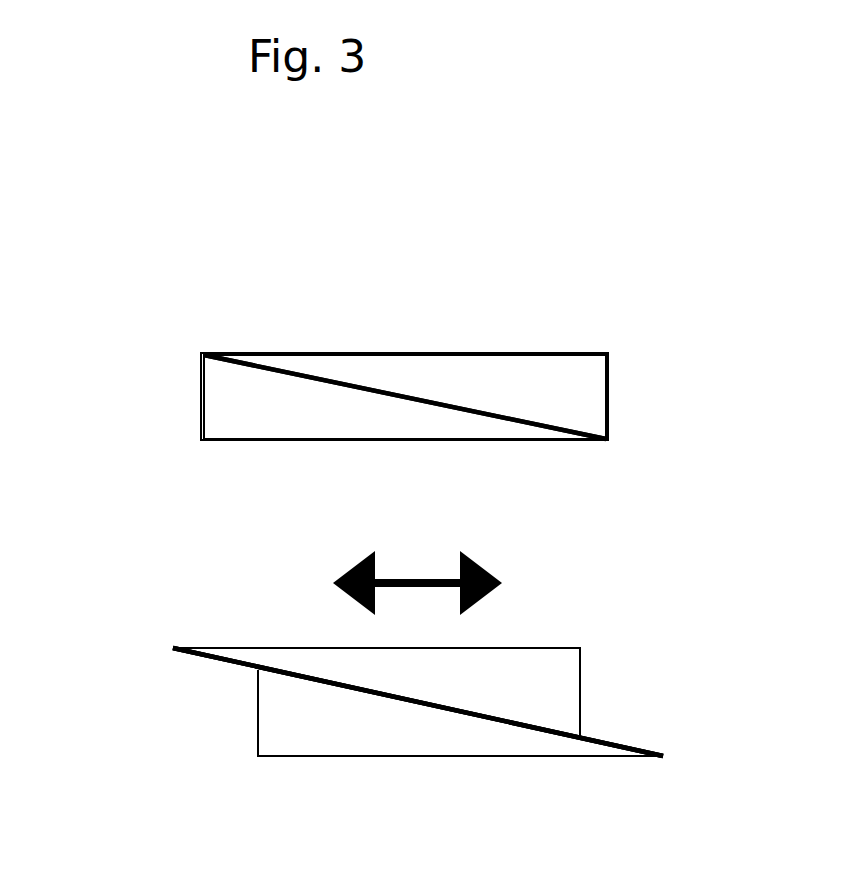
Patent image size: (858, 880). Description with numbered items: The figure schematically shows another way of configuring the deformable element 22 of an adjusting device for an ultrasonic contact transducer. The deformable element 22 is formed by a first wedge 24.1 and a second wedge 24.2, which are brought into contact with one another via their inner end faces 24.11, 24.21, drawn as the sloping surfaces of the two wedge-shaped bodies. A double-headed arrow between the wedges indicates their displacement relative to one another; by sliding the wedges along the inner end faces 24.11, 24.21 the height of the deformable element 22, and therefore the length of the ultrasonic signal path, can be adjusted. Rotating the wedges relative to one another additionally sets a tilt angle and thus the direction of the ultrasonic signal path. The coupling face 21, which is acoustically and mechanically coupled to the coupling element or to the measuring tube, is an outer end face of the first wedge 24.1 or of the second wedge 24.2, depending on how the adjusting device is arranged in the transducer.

The deformable element 22 is at (403, 297).
The coupling face 21 is at (578, 352).
The first wedge 24.1 is at (260, 410).
The second wedge 24.2 is at (548, 382).
The inner end face 24.11 is at (607, 738).
The inner end face 24.21 is at (215, 655).